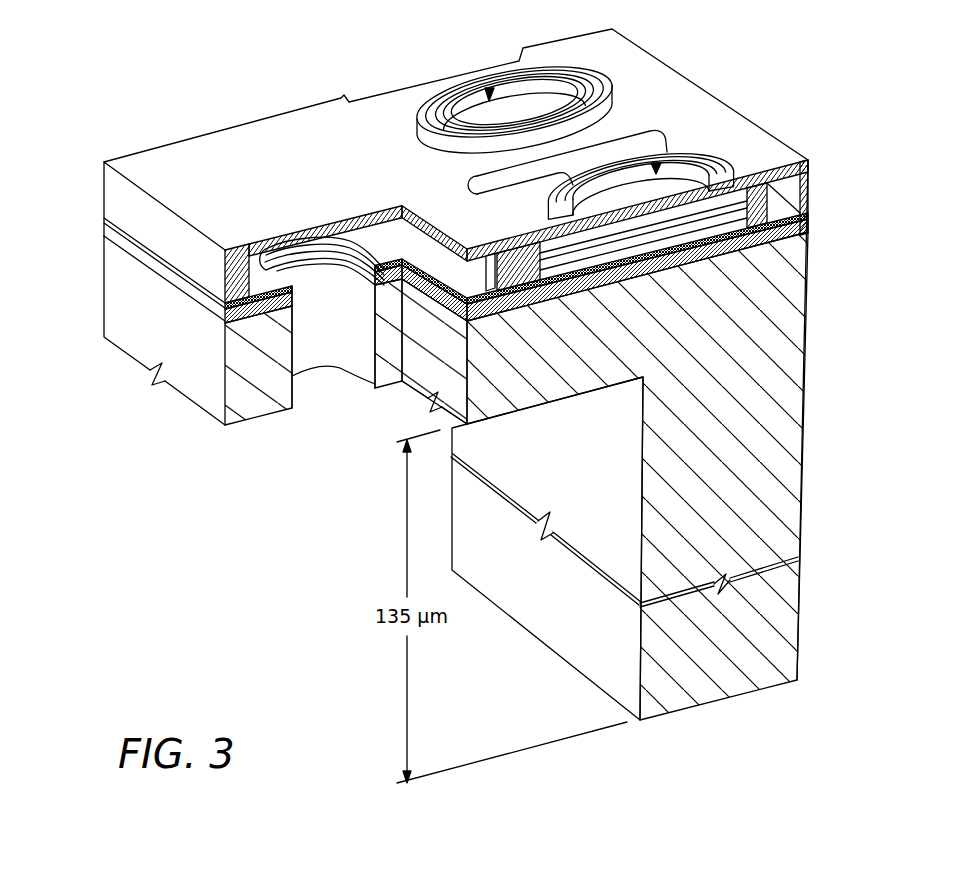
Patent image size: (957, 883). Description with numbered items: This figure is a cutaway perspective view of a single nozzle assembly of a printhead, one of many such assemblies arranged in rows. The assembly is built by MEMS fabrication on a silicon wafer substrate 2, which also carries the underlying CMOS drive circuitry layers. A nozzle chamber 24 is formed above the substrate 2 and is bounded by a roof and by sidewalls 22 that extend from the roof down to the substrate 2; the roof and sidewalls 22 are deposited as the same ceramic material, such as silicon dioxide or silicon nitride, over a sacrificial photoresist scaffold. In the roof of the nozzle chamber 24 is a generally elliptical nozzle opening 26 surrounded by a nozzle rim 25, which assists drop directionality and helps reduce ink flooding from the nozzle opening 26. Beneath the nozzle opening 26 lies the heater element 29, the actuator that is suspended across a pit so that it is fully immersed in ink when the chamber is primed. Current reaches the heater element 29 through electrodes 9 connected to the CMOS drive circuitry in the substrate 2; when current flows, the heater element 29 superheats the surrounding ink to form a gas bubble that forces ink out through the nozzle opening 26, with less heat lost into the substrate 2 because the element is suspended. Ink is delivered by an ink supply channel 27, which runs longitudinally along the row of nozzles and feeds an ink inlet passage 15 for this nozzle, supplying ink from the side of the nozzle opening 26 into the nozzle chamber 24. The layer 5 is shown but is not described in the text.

The silicon wafer substrate 2 is at (803, 406).
The passivation layer 5 is at (810, 220).
The electrodes 9 is at (810, 177).
The ink inlet passage 15 is at (327, 349).
The sidewalls 22 is at (133, 208).
The nozzle chamber 24 is at (694, 199).
The nozzle rim 25 is at (677, 150).
The nozzle opening 26 is at (482, 86).
The ink supply channel 27 is at (300, 534).
The heater element 29 is at (717, 237).